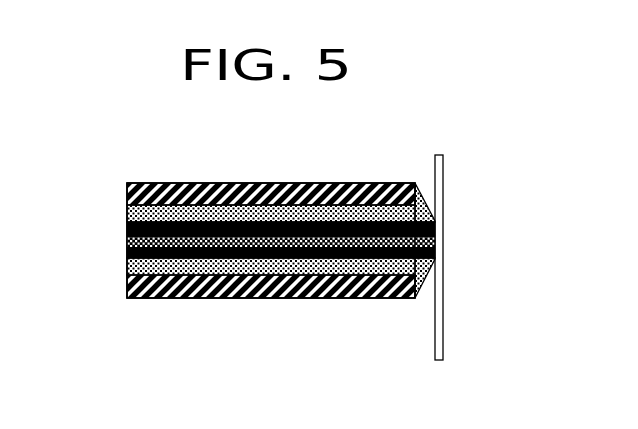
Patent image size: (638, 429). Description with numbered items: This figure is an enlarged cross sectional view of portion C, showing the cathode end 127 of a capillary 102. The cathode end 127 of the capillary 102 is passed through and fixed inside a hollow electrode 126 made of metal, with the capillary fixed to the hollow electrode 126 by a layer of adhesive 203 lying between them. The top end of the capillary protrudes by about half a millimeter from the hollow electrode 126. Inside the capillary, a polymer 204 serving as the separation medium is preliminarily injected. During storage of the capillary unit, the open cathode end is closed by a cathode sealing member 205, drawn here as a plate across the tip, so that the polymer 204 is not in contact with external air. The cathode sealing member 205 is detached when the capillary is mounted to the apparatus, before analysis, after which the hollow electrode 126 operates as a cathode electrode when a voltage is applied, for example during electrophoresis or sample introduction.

The hollow electrode 126 is at (185, 192).
The adhesive 203 is at (272, 213).
The polymer 204 is at (128, 238).
The cable 102 is at (127, 258).
The cathode end 127 is at (257, 257).
The cathode sealing member 205 is at (437, 340).